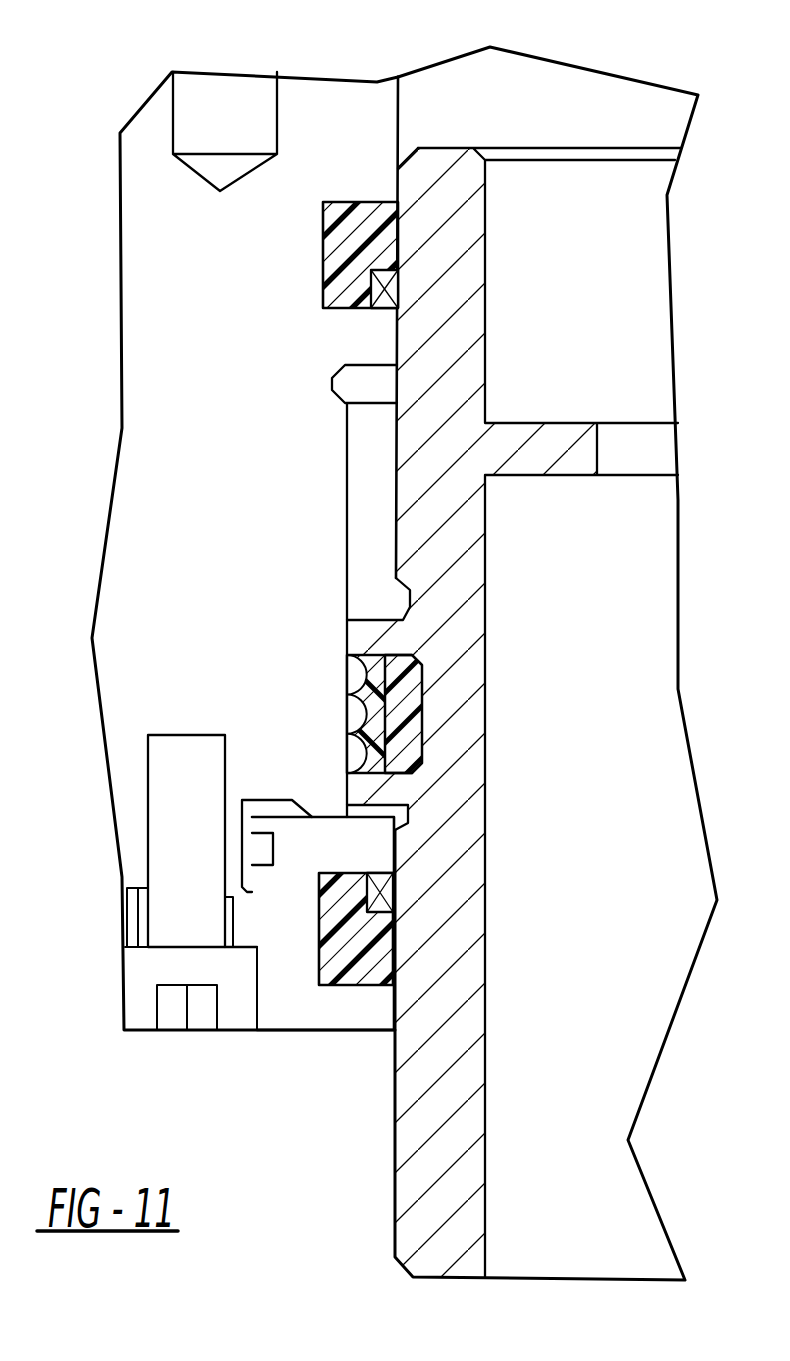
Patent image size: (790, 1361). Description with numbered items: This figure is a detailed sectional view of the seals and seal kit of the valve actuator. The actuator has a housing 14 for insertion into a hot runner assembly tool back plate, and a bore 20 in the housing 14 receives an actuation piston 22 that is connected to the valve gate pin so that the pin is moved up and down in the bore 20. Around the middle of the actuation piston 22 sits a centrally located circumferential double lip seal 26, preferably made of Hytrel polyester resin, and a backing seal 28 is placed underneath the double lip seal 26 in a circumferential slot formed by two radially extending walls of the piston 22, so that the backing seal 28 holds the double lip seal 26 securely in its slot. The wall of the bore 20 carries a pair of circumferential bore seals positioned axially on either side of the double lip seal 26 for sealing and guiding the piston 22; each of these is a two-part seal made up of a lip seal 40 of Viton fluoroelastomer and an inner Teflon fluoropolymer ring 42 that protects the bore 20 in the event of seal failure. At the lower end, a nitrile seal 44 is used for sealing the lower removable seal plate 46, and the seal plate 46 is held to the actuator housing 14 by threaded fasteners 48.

The housing 14 is at (202, 522).
The bore 20 is at (400, 122).
The actuation piston 22 is at (463, 469).
The double lip seal 26 is at (350, 667).
The backing seal 28 is at (413, 683).
The lip seal 40 is at (357, 223).
The Teflon fluoropolymer ring 42 is at (400, 283).
The seal 44 is at (258, 855).
The lower removable seal plate 46 is at (273, 912).
The threaded fasteners 48 is at (178, 955).